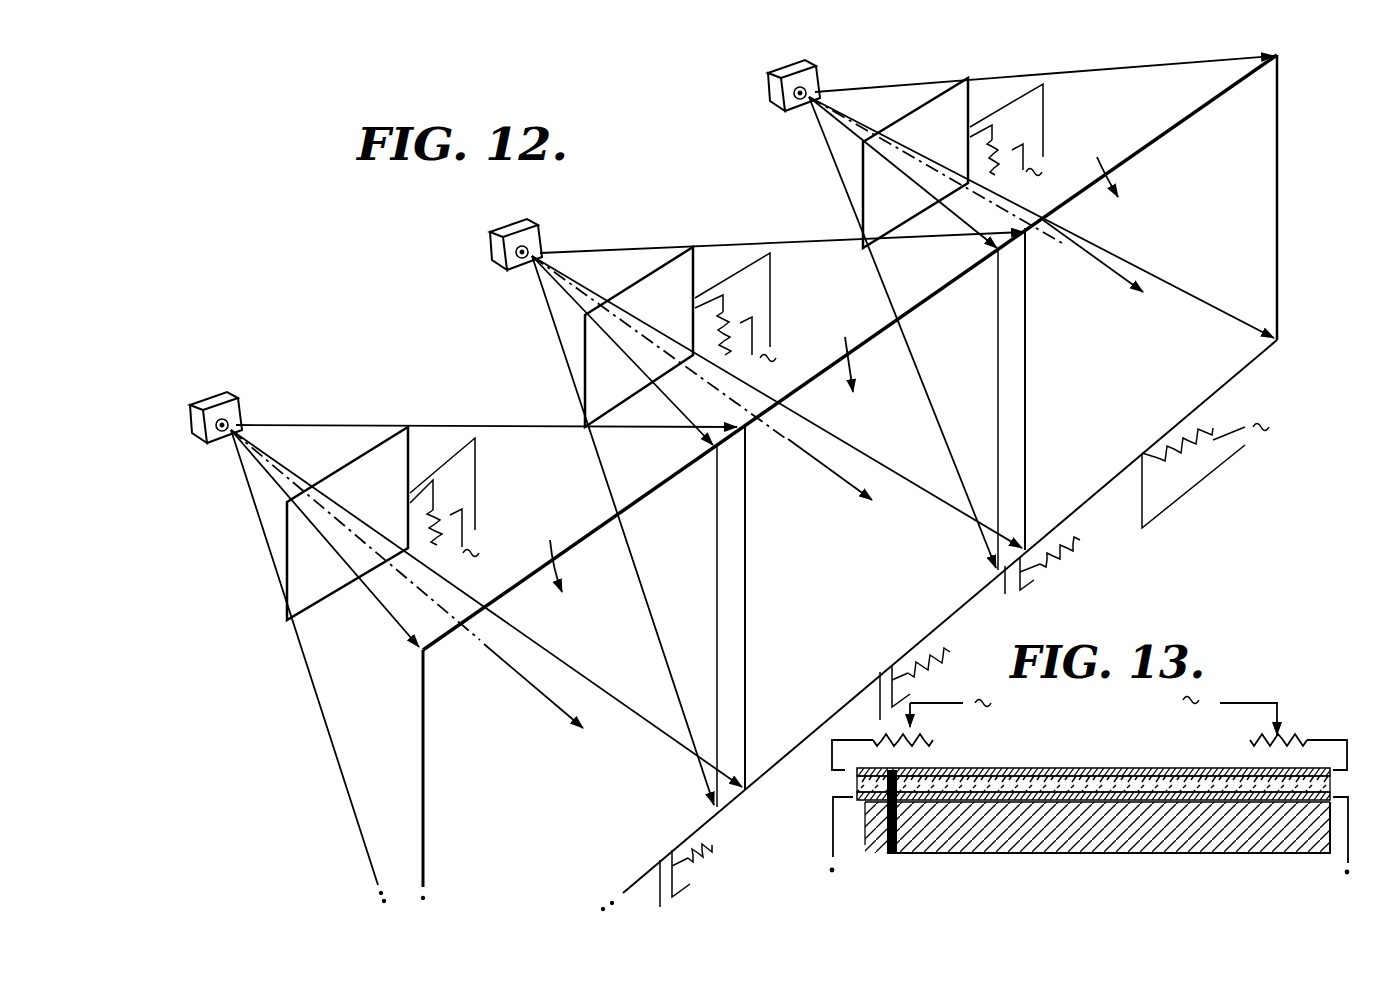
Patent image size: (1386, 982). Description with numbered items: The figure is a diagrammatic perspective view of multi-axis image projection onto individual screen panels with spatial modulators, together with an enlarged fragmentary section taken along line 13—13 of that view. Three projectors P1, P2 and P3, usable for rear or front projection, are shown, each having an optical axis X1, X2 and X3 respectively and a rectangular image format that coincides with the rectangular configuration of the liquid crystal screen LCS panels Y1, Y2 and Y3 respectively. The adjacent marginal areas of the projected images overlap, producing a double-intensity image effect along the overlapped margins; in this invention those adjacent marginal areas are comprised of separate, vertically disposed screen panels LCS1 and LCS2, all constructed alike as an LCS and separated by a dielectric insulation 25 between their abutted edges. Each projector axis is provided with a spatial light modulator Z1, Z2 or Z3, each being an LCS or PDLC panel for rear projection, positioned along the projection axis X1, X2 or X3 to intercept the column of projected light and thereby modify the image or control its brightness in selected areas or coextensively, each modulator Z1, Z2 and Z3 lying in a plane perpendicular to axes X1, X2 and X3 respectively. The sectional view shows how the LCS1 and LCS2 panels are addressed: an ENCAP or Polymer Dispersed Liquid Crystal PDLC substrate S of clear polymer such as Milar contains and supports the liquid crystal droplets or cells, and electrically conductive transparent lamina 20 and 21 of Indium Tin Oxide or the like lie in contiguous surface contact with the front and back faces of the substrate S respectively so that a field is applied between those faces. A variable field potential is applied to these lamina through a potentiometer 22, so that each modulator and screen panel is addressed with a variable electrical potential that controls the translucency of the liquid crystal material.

In FIG. 12, the projector P1 is at (234, 392).
In FIG. 12, the projector P2 is at (541, 230).
In FIG. 12, the projector P3 is at (829, 68).
In FIG. 12, the spacial light modulator Z1 is at (363, 450).
In FIG. 12, the spacial light modulator Z2 is at (666, 262).
In FIG. 12, the spacial light modulator Z3 is at (950, 104).
In FIG. 12, the optical axis X1 is at (535, 690).
In FIG. 12, the optical axis X2 is at (838, 485).
In FIG. 12, the optical axis X3 is at (1112, 278).
In FIG. 12, the LCS panel Y1 is at (537, 561).
In FIG. 12, the LCS panel Y2 is at (828, 361).
In FIG. 12, the LCS panel Y3 is at (1087, 173).
In FIG. 12, the liquid crystal screen LCS is at (850, 483).
In FIG. 12, the screen panel LCS1 is at (747, 664).
In FIG. 12, the screen panel LCS2 is at (1028, 456).
In FIG. 12, the potentiometer 22 is at (447, 511).
In FIG. 13, the potentiometer 22 is at (943, 736).
In FIG. 12, the section line 13 is at (1000, 428).
In FIG. 13, the electrically conductive transparent lamina 20 is at (1037, 766).
In FIG. 13, the electrically conductive transparent lamina 21 is at (1013, 783).
In FIG. 13, the Polymer Dispersed Liquid Crystal PDLC is at (1213, 780).
In FIG. 13, the substrate S is at (1035, 831).
In FIG. 13, the dielectric insulation 25 is at (1100, 838).